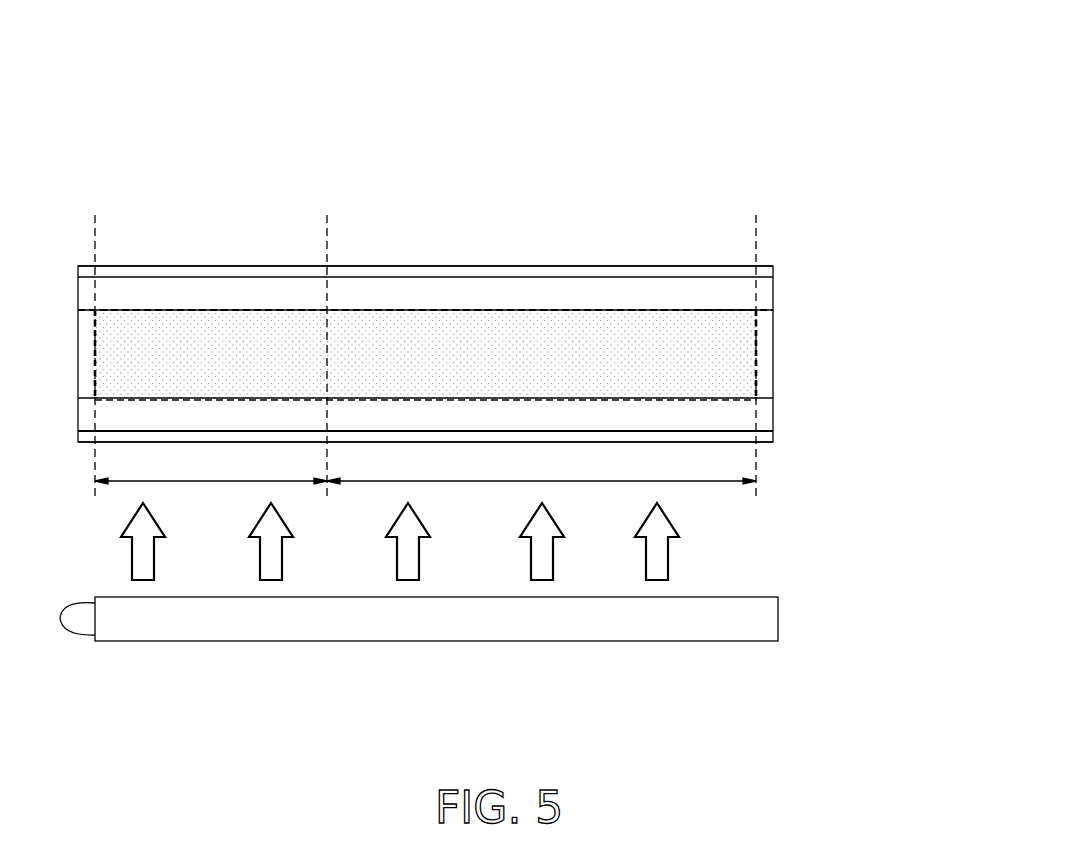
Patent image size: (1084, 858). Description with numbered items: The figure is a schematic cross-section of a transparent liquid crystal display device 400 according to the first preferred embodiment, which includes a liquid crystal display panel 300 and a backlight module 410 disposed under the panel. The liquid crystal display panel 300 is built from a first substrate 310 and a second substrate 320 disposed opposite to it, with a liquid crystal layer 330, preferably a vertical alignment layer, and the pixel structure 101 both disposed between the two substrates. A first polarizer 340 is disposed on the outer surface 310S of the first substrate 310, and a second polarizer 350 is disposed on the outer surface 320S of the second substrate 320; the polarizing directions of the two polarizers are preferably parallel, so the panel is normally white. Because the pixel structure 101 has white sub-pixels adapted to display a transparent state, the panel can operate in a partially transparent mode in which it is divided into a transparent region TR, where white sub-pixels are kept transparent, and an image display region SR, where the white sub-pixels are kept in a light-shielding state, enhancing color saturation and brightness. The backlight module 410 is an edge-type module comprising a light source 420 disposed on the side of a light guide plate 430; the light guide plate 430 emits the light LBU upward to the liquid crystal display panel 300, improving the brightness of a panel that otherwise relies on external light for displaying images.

The transparent liquid crystal display device 400 is at (760, 92).
The liquid crystal display panel 300 is at (862, 487).
The first substrate 310 is at (773, 415).
The outer surface of first substrate 310S is at (773, 438).
The second substrate 320 is at (773, 290).
The outer surface of second substrate 320S is at (773, 272).
The liquid crystal layer 330 is at (773, 356).
The first polarizer 340 is at (662, 437).
The second polarizer 350 is at (610, 270).
The pixel structure 101 is at (700, 310).
The backlight module 410 is at (853, 595).
The light source 420 is at (83, 625).
The light guide plate 430 is at (500, 630).
The light LBU is at (668, 555).
The transparent region TR is at (211, 356).
The image display region SR is at (541, 356).